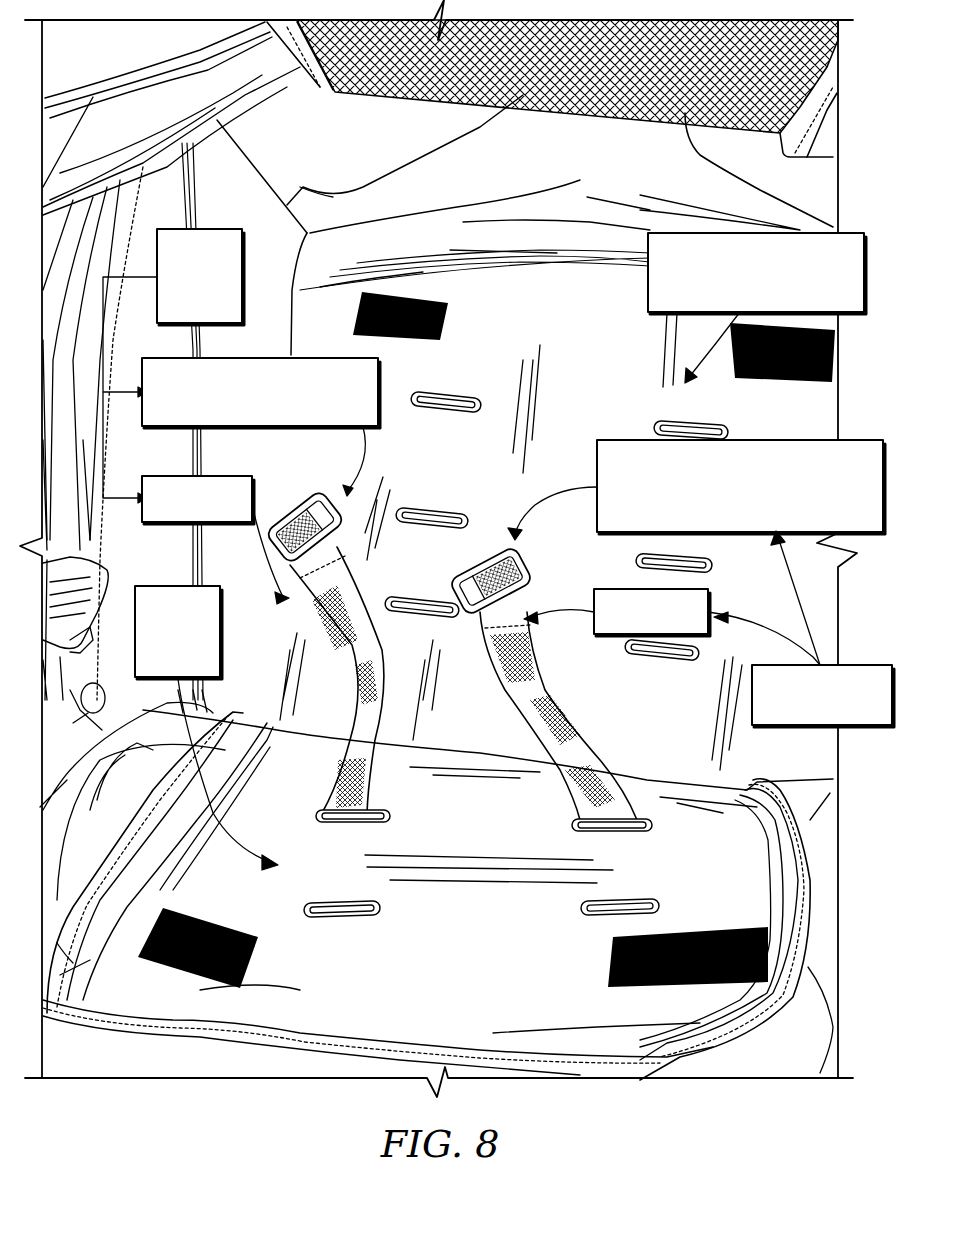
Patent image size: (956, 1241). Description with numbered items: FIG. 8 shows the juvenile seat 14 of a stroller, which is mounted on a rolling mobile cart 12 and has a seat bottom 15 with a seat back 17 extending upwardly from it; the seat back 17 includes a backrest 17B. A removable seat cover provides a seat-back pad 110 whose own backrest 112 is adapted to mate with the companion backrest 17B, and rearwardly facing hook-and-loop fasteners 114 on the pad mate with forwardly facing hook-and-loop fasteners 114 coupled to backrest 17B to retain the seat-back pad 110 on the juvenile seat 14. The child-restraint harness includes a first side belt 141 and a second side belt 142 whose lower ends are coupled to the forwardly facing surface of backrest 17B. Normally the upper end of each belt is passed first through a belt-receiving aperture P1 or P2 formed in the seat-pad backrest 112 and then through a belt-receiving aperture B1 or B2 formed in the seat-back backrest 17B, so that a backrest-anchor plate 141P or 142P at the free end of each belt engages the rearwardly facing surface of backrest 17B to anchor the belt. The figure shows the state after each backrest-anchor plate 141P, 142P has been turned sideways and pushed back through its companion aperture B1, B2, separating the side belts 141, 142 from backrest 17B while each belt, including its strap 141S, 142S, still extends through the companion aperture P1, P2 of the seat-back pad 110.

The mobile cart 12 is at (83, 390).
The juvenile seat 14 is at (520, 320).
The seat bottom 15 is at (43, 804).
The seat back 17 is at (587, 369).
The backrest 17B is at (670, 232).
The seat-back pad 110 is at (150, 586).
The backrest 112 is at (438, 959).
The hook-and-loop fasteners 114 is at (440, 330).
The first side belt 141 is at (215, 229).
The backrest-anchor plate 141P is at (318, 358).
The strap of first side belt 141S is at (245, 478).
The second side belt 142 is at (855, 665).
The backrest-anchor plate 142P is at (632, 440).
The strap of second side belt 142S is at (618, 640).
The belt-receiving aperture B1 is at (425, 510).
The belt-receiving aperture B2 is at (688, 560).
The belt-receiving aperture P1 is at (325, 905).
The belt-receiving aperture P2 is at (632, 905).